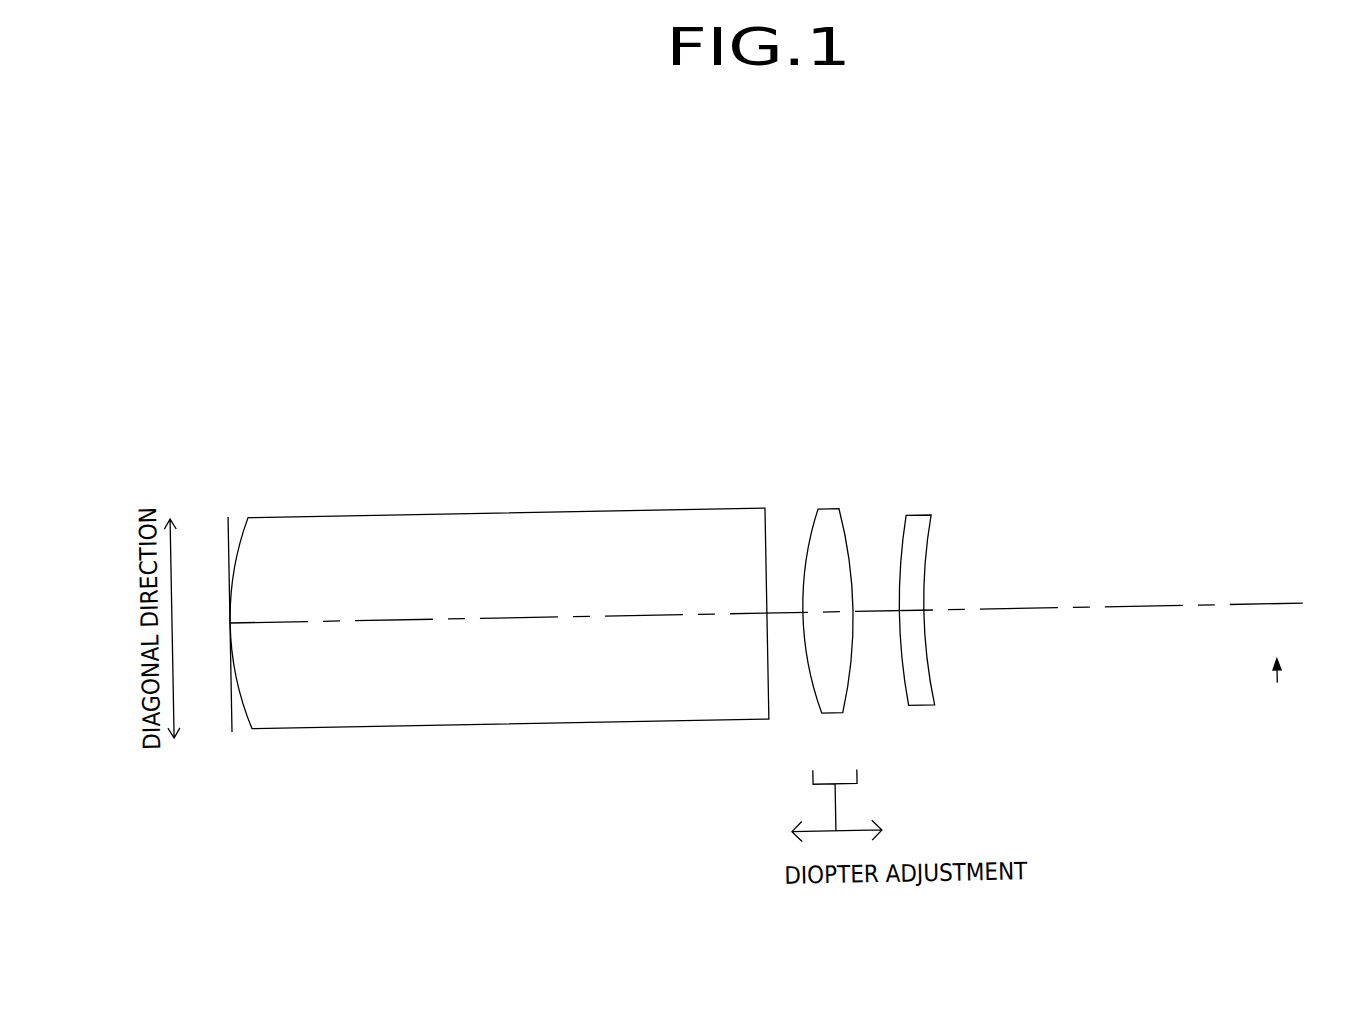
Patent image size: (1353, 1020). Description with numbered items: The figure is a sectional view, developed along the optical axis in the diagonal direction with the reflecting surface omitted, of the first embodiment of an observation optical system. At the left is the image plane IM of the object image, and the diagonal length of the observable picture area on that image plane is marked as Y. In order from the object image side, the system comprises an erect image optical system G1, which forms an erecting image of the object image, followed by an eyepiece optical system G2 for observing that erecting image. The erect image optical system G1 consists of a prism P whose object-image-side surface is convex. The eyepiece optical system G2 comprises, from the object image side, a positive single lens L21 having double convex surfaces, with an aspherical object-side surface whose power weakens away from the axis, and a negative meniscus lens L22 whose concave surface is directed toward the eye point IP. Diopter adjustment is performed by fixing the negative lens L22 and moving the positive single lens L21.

The image plane IM is at (230, 549).
The prism P is at (432, 518).
The erect image optical system G1 is at (765, 390).
The eyepiece optical system G2 is at (793, 390).
The positive single lens L21 is at (835, 520).
The negative meniscus lens L22 is at (926, 528).
The eye point IP is at (1276, 560).
The diagonal length Y is at (215, 518).